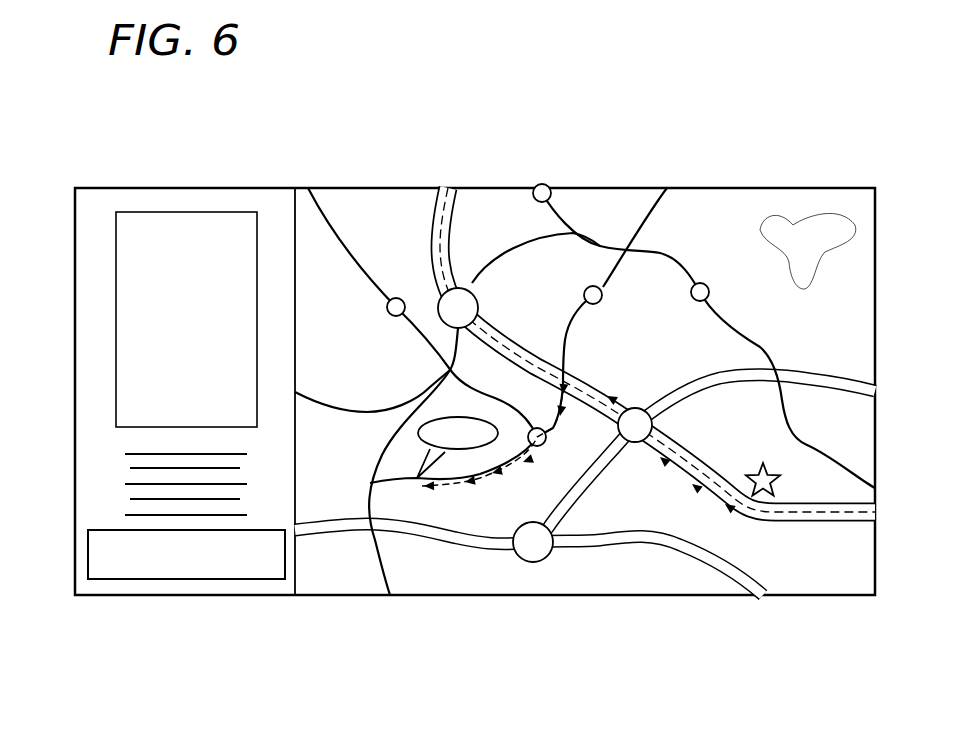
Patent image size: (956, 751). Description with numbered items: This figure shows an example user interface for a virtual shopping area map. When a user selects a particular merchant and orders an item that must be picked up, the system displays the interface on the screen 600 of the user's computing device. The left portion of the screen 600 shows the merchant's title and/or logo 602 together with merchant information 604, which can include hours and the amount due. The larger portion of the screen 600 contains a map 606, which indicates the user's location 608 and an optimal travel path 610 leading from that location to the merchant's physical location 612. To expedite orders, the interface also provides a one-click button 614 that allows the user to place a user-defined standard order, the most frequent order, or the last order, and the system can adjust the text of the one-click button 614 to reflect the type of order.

The screen 600 is at (366, 184).
The merchant's title and/or logo 602 is at (190, 235).
The merchant information 604 is at (125, 484).
The map 606 is at (697, 224).
The user's location 608 is at (421, 487).
The optimal travel path 610 is at (683, 488).
The merchant's physical location 612 is at (773, 498).
The one-click button 614 is at (182, 580).